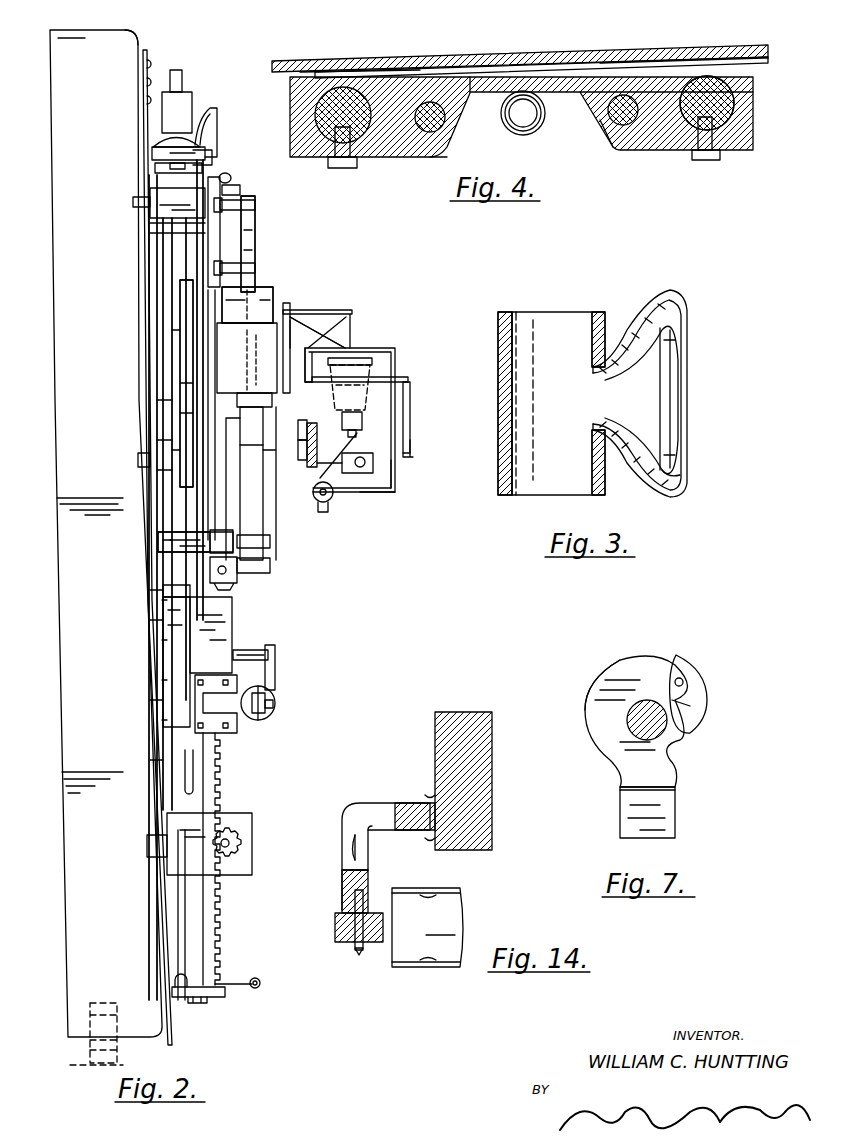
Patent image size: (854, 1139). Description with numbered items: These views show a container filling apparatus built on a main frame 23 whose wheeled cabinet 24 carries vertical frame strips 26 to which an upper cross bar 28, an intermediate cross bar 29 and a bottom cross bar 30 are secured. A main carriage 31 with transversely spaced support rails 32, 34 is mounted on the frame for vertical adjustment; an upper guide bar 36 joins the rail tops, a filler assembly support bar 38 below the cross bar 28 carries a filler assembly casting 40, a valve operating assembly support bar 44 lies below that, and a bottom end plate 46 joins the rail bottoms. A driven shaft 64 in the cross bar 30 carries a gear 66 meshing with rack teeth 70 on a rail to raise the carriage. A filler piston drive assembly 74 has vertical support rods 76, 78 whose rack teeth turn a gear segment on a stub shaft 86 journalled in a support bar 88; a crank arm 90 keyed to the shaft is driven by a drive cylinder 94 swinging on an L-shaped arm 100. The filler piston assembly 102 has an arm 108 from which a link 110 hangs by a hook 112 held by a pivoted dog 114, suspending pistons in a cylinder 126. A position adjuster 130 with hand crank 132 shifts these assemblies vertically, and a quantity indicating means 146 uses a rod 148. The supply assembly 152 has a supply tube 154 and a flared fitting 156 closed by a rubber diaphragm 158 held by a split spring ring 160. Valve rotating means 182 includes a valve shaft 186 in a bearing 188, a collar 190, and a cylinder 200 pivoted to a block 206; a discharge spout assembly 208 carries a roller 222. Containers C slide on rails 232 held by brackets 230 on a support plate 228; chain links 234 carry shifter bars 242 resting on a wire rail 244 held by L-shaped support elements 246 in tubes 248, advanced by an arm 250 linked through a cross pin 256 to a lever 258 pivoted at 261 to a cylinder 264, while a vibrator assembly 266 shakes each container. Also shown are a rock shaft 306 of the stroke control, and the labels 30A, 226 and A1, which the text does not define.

In FIG. 2, the main frame 23 is at (150, 50).
In FIG. 2, the cabinet 24 is at (68, 442).
In FIG. 4, the cabinet 24 is at (535, 55).
In FIG. 2, the frame strips 26 is at (143, 133).
In FIG. 4, the frame strips 26 is at (353, 77).
In FIG. 2, the upper cross bar 28 is at (160, 208).
In FIG. 2, the intermediate cross bar 29 is at (143, 465).
In FIG. 2, the bottom cross bar 30 is at (180, 860).
In FIG. 2, the lever arm 30A is at (251, 957).
In FIG. 2, the rock shaft 306 is at (258, 978).
In FIG. 2, the main carriage 31 is at (204, 155).
In FIG. 4, the main carriage 31 is at (637, 152).
In FIG. 2, the support rail 32 is at (165, 155).
In FIG. 4, the support rail 32 is at (435, 110).
In FIG. 4, the support rail 34 is at (690, 130).
In FIG. 2, the upper guide bar 36 is at (160, 162).
In FIG. 4, the upper guide bar 36 is at (385, 160).
In FIG. 2, the filler assembly support bar 38 is at (153, 345).
In FIG. 2, the filler assembly casting 40 is at (197, 367).
In FIG. 2, the valve operating assembly support bar 44 is at (210, 540).
In FIG. 2, the bottom end plate 46 is at (178, 980).
In FIG. 2, the driven shaft 64 is at (252, 838).
In FIG. 2, the gear 66 is at (245, 835).
In FIG. 2, the rack teeth 70 is at (216, 777).
In FIG. 2, the filler piston drive assembly 74 is at (280, 668).
In FIG. 4, the filler piston drive assembly 74 is at (436, 140).
In FIG. 14, the filler piston drive assembly 74 is at (380, 798).
In FIG. 4, the filler piston support rod 76 is at (445, 120).
In FIG. 4, the filler piston support rod 78 is at (612, 128).
In FIG. 2, the stub shaft 86 is at (250, 650).
In FIG. 2, the filler piston drive assembly support bar 88 is at (196, 648).
In FIG. 14, the filler piston drive assembly support bar 88 is at (470, 725).
In FIG. 2, the crank arm 90 is at (272, 690).
In FIG. 2, the drive cylinder 94 is at (268, 712).
In FIG. 14, the drive cylinder 94 is at (450, 915).
In FIG. 14, the L-shaped arm 100 is at (368, 858).
In FIG. 2, the filler piston assembly 102 is at (256, 236).
In FIG. 7, the filler piston assembly 102 is at (634, 652).
In FIG. 2, the arm 108 is at (255, 268).
In FIG. 7, the arm 108 is at (628, 722).
In FIG. 2, the link 110 is at (252, 242).
In FIG. 7, the link 110 is at (670, 806).
In FIG. 7, the hook 112 is at (592, 700).
In FIG. 7, the pivoted dog 114 is at (680, 660).
In FIG. 2, the cylinder 126 is at (262, 300).
In FIG. 2, the position adjuster 130 is at (230, 177).
In FIG. 2, the hand crank 132 is at (240, 190).
In FIG. 2, the quantity indicating means 146 is at (196, 248).
In FIG. 2, the rod 148 is at (210, 263).
In FIG. 2, the supply assembly 152 is at (193, 85).
In FIG. 4, the supply assembly 152 is at (515, 115).
In FIG. 3, the supply assembly 152 is at (545, 305).
In FIG. 2, the supply tube 154 is at (192, 120).
In FIG. 4, the supply tube 154 is at (545, 113).
In FIG. 3, the supply tube 154 is at (528, 492).
In FIG. 2, the flared fitting 156 is at (205, 126).
In FIG. 3, the flared fitting 156 is at (628, 330).
In FIG. 3, the rubber diaphragm 158 is at (680, 385).
In FIG. 3, the split spring ring 160 is at (672, 470).
In FIG. 2, the valve rotating means 182 is at (247, 425).
In FIG. 2, the valve shaft 186 is at (257, 472).
In FIG. 2, the bearing 188 is at (270, 541).
In FIG. 2, the collar 190 is at (270, 565).
In FIG. 2, the cylinder 200 is at (170, 590).
In FIG. 2, the block 206 is at (158, 548).
In FIG. 2, the discharge spout assembly 208 is at (340, 313).
In FIG. 2, the roller 222 is at (290, 325).
In FIG. 2, the pivot block 226 is at (302, 435).
In FIG. 2, the support plate 228 is at (326, 502).
In FIG. 2, the brackets 230 is at (350, 473).
In FIG. 2, the rails 232 is at (362, 426).
In FIG. 2, the links 234 is at (308, 384).
In FIG. 2, the container shifter bars 242 is at (408, 380).
In FIG. 2, the wire rail 244 is at (410, 392).
In FIG. 2, the L-shaped support elements 246 is at (415, 455).
In FIG. 2, the tubes 248 is at (395, 478).
In FIG. 2, the arm 250 is at (335, 340).
In FIG. 2, the cross pin 256 is at (375, 350).
In FIG. 2, the lever 258 is at (372, 375).
In FIG. 2, the pivot connection 261 is at (378, 494).
In FIG. 2, the cylinder 264 is at (325, 512).
In FIG. 2, the vibrator assembly 266 is at (309, 470).
In FIG. 2, the cylinder A1 is at (235, 330).
In FIG. 2, the container C is at (380, 362).